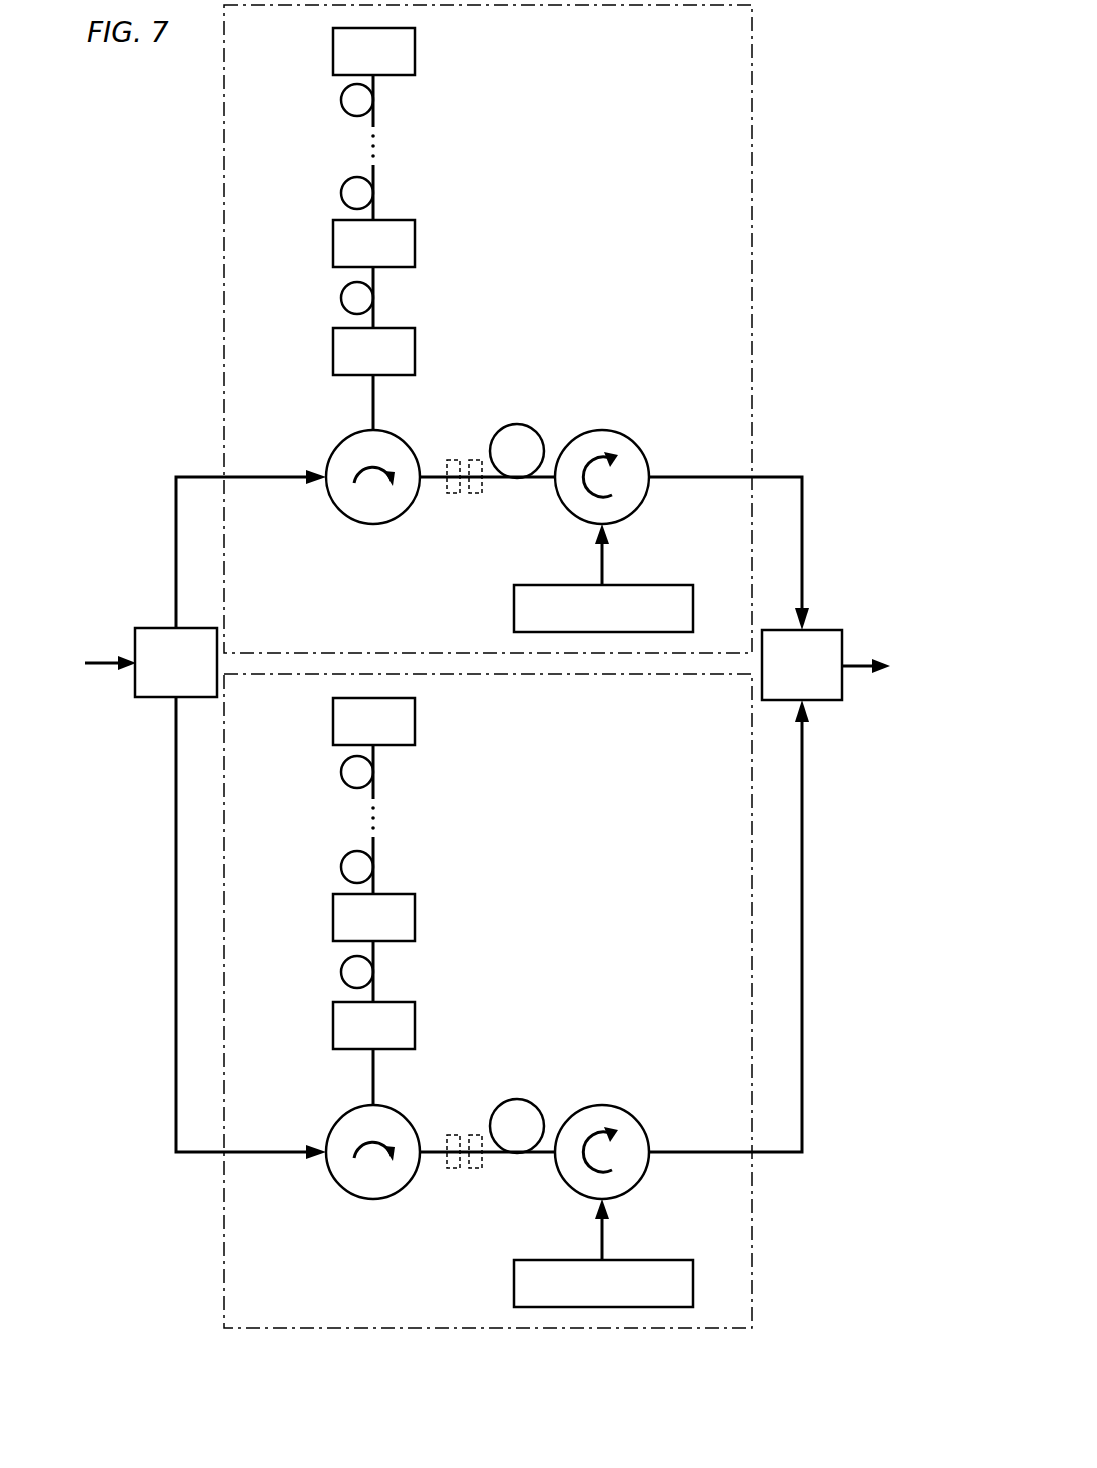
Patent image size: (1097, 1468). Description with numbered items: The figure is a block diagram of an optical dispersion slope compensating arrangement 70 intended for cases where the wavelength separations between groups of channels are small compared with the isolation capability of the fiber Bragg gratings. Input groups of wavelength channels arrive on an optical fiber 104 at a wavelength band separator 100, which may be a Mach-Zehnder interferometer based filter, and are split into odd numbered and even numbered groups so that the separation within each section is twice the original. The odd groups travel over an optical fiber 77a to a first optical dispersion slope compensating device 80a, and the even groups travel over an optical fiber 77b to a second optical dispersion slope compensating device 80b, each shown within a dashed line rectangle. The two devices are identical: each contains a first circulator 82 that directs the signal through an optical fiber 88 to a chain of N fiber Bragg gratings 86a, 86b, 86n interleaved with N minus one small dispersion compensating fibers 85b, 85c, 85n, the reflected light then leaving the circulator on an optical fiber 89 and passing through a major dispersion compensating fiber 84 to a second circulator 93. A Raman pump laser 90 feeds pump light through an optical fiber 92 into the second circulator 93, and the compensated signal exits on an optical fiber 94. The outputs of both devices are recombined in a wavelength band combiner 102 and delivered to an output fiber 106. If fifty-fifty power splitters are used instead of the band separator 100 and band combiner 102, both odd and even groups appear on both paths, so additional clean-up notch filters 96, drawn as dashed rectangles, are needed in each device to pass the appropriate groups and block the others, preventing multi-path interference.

The optical dispersion slope compensating arrangement 70 is at (162, 262).
The optical fiber 77a is at (254, 475).
The optical fiber 77b is at (254, 1150).
The first optical dispersion slope compensating device 80a is at (224, 146).
The second optical dispersion slope compensating device 80b is at (226, 1266).
The first circulator 82 is at (334, 508).
The major dispersion compensating fiber 84 is at (514, 424).
The small dispersion compensating fiber 85b is at (341, 302).
The small dispersion compensating fiber 85c is at (341, 197).
The small dispersion compensating fiber 85n is at (341, 104).
The fiber Bragg grating 86a is at (333, 358).
The fiber Bragg grating 86b is at (333, 249).
The fiber Bragg grating 86n is at (333, 58).
The optical fiber 88 is at (374, 392).
The optical fiber 89 is at (424, 472).
The Raman pump laser 90 is at (514, 616).
The optical fiber 92 is at (603, 562).
The second circulator 93 is at (562, 508).
The optical fiber 94 is at (707, 475).
The clean-up notch filter 96 is at (453, 497).
The wavelength band separator 100 is at (140, 628).
The wavelength band combiner 102 is at (828, 630).
The optical fiber 104 is at (96, 660).
The output fiber 106 is at (853, 664).